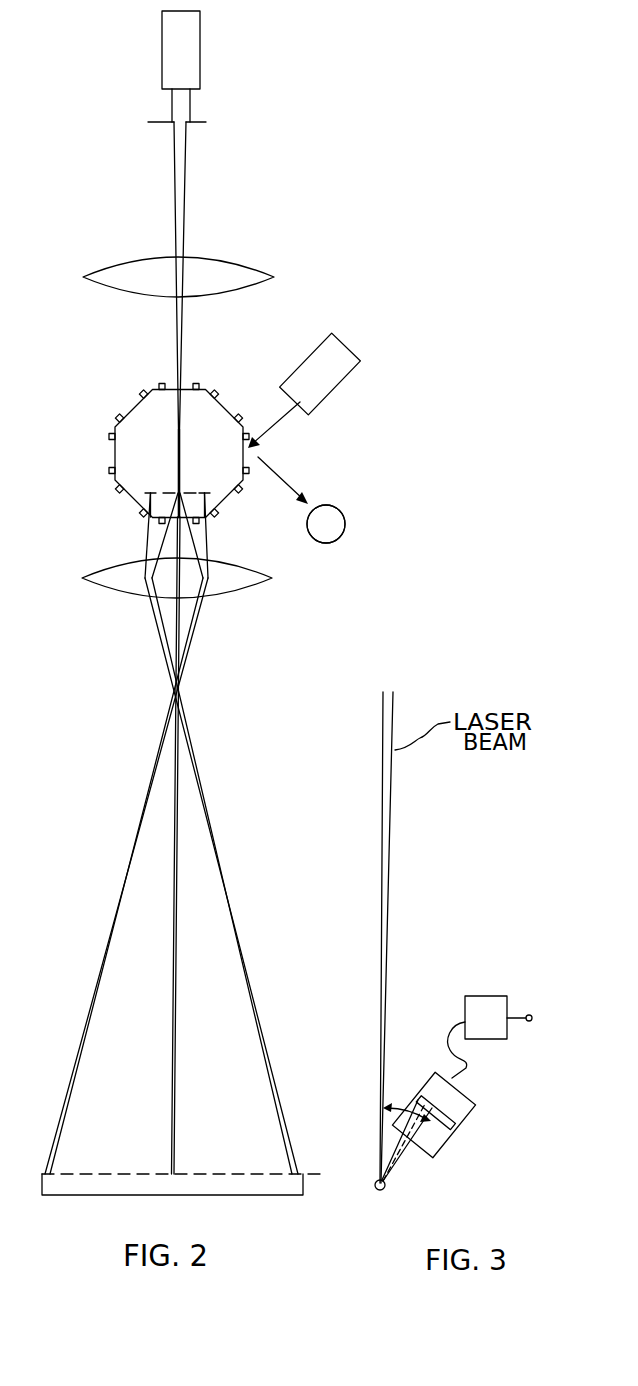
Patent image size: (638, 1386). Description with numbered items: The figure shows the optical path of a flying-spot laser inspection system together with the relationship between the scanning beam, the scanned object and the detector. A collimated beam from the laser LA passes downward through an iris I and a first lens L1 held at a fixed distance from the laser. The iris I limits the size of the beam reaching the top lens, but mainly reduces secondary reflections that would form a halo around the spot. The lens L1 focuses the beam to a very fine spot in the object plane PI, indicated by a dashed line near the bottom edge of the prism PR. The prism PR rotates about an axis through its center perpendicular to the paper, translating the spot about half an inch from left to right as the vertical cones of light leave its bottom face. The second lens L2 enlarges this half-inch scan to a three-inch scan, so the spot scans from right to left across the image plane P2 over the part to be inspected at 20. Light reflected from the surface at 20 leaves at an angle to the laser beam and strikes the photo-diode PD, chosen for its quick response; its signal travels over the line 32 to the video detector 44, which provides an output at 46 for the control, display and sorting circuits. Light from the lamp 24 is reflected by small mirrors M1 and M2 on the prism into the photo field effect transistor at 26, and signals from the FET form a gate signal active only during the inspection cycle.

In FIG. 2, the laser LA is at (200, 48).
In FIG. 2, the iris I is at (206, 122).
In FIG. 2, the first lens L1 is at (237, 262).
In FIG. 2, the prism PR is at (207, 446).
In FIG. 2, the mirror M1 is at (250, 430).
In FIG. 2, the mirror M2 is at (247, 468).
In FIG. 2, the object plane PI is at (166, 491).
In FIG. 2, the lamp 24 is at (345, 343).
In FIG. 2, the photo field effect transistor 26 is at (339, 510).
In FIG. 2, the field effect transistor FET is at (331, 543).
In FIG. 2, the second lens L2 is at (245, 596).
In FIG. 2, the image plane P2 is at (325, 1174).
In FIG. 2, the part to be inspected 20 is at (303, 1195).
In FIG. 3, the part to be inspected 20 is at (386, 1185).
In FIG. 3, the video detector 44 is at (490, 996).
In FIG. 3, the video detector output 46 is at (541, 1008).
In FIG. 3, the line 32 is at (452, 1030).
In FIG. 3, the photo-diode PD is at (475, 1106).